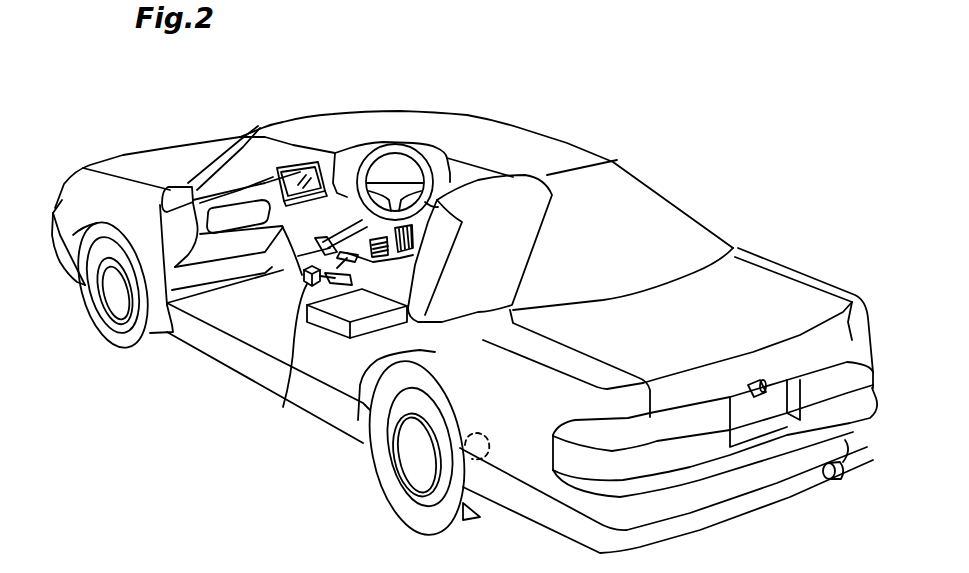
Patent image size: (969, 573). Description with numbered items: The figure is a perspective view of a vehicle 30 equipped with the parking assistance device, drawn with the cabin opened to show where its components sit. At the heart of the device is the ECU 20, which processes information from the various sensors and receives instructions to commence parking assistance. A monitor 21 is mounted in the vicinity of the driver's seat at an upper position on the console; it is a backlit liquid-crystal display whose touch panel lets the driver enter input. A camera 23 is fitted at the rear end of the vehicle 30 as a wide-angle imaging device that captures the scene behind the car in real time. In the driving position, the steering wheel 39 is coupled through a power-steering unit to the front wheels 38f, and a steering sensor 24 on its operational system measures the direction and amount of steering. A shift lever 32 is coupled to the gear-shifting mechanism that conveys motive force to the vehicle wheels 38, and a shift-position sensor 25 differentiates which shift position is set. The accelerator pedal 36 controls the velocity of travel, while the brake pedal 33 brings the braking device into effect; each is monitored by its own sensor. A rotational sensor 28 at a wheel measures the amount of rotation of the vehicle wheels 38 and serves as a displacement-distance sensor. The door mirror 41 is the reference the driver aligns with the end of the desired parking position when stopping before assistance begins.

The ECU 20 is at (373, 325).
The monitor 21 is at (296, 176).
The camera 23 is at (758, 380).
The steering sensor 24 is at (315, 245).
The shift-position sensor 25 is at (286, 359).
The rotational sensor 28 is at (490, 452).
The vehicle 30 is at (557, 132).
The shift lever 32 is at (402, 278).
The brake pedal 33 is at (367, 217).
The accelerator pedal 36 is at (413, 227).
The vehicle wheel 38 is at (398, 503).
The front wheel 38f is at (120, 335).
The steering wheel 39 is at (420, 158).
The door mirror 41 is at (173, 198).